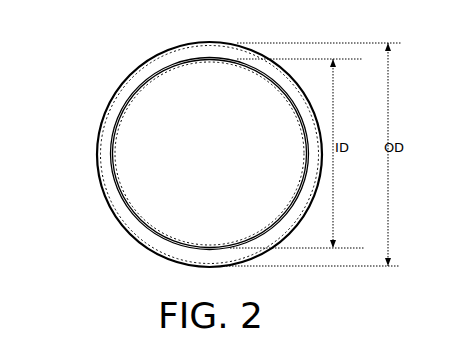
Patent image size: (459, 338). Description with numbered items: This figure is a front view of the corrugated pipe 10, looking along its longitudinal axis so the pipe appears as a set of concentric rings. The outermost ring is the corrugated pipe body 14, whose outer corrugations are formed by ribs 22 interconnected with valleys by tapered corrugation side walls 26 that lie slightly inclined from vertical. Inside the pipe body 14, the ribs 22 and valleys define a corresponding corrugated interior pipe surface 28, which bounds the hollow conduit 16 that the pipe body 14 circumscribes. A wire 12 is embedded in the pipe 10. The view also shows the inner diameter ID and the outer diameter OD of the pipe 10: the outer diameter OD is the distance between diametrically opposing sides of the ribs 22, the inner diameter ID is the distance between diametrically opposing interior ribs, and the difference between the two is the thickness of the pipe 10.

The corrugated pipe 10 is at (177, 138).
The wire 12 is at (210, 58).
The corrugated pipe body 14 is at (118, 125).
The hollow conduit 16 is at (166, 185).
The ribs 22 is at (103, 112).
The corrugation side walls 26 is at (131, 73).
The corrugated interior pipe surface 28 is at (292, 113).